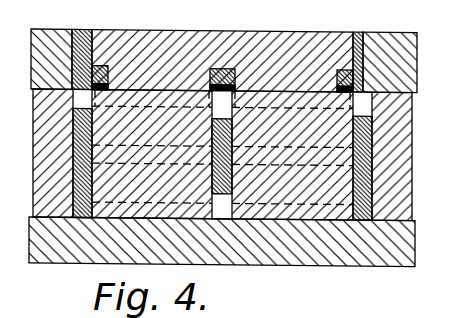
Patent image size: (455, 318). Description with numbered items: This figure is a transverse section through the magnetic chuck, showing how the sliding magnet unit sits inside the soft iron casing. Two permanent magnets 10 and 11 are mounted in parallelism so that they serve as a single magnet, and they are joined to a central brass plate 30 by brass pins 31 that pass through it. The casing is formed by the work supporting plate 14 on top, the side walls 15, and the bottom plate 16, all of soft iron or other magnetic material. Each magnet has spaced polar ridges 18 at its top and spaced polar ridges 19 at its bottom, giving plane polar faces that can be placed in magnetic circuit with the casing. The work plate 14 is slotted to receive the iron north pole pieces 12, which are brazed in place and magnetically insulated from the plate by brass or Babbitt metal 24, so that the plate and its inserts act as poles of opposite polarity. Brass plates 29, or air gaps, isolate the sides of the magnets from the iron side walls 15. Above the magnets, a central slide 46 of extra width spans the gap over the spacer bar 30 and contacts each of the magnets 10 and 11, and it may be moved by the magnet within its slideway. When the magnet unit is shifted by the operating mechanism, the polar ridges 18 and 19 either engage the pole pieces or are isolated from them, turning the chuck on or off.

The permanent magnet 10 is at (152, 142).
The permanent magnet 11 is at (292, 145).
The north pole piece 12 is at (222, 79).
The work supporting plate 14 is at (412, 80).
The side wall 15 is at (40, 143).
The bottom plate 16 is at (405, 256).
The polar ridge 18 is at (222, 99).
The polar ridge 19 is at (222, 211).
The Babbitt metal 24 is at (360, 32).
The brass plate 29 is at (73, 180).
The central brass plate 30 is at (222, 155).
The brass pin 31 is at (372, 134).
The central slide 46 is at (238, 88).